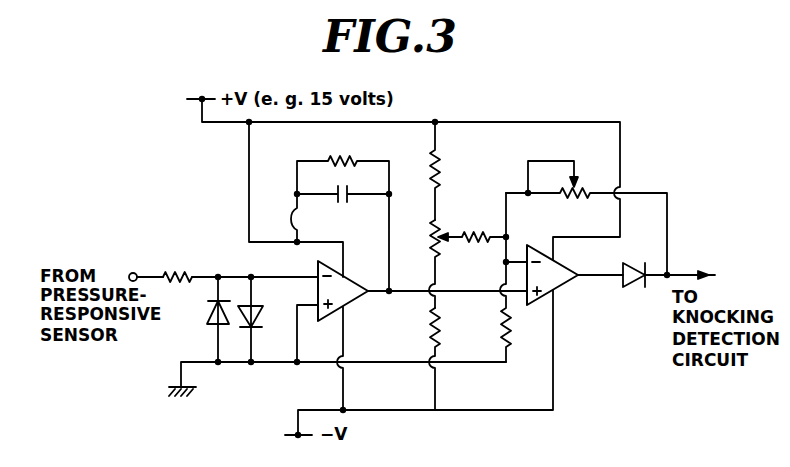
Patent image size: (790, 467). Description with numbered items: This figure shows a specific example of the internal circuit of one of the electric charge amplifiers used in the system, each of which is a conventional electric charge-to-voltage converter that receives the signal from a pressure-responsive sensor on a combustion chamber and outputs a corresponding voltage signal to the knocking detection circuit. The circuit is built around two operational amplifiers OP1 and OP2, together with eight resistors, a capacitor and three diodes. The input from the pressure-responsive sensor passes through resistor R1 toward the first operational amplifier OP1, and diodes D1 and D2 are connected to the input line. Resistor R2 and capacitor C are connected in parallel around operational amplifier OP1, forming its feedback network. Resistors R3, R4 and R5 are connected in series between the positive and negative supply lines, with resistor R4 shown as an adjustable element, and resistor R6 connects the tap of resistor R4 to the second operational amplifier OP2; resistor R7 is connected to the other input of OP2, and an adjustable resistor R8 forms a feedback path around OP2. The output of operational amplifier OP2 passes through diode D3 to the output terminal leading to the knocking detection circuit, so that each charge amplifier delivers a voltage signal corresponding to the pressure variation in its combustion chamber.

The resistor R1 is at (177, 264).
The resistor R2 is at (340, 212).
The capacitor C is at (343, 206).
The diode D1 is at (205, 319).
The diode D2 is at (263, 319).
The operational amplifier OP1 is at (422, 299).
The resistor R3 is at (423, 171).
The resistor R4 is at (423, 264).
The resistor R5 is at (424, 359).
The resistor R6 is at (473, 226).
The resistor R7 is at (494, 277).
The resistor R8 is at (586, 218).
The operational amplifier OP2 is at (564, 293).
The diode D3 is at (669, 288).